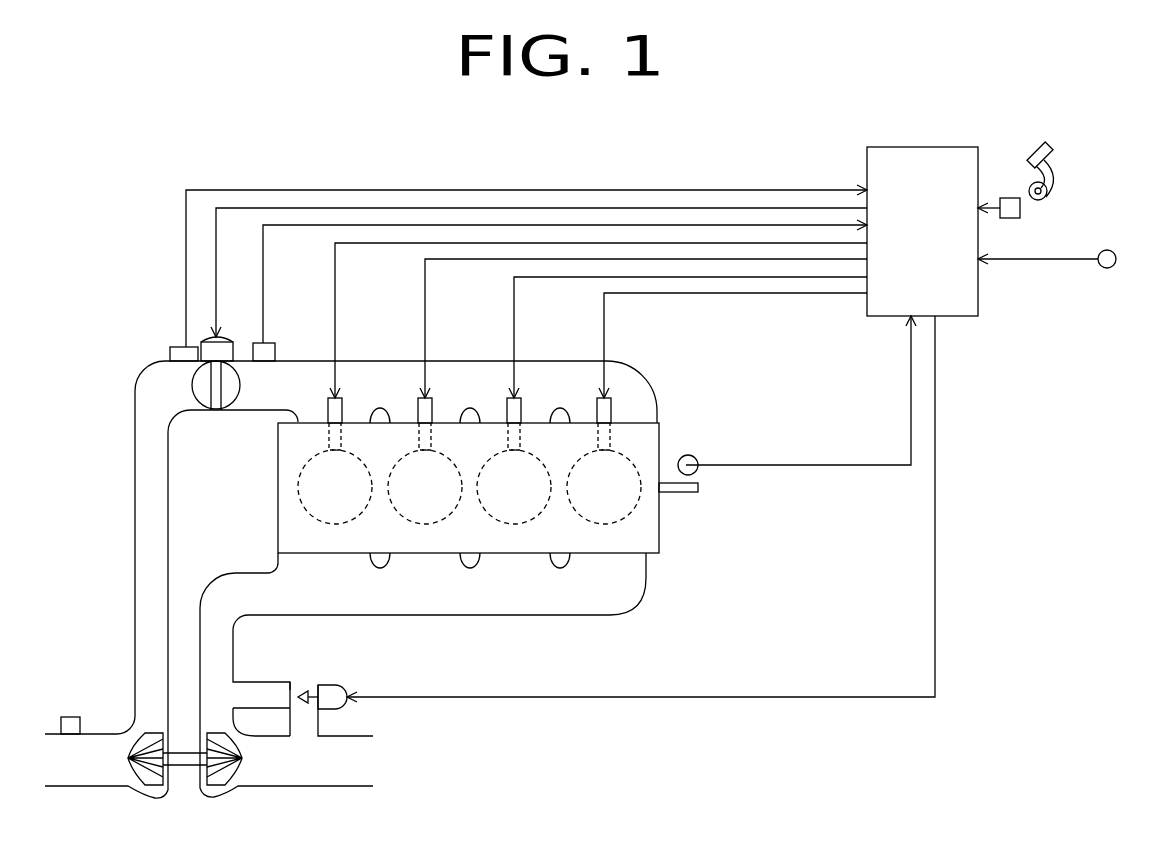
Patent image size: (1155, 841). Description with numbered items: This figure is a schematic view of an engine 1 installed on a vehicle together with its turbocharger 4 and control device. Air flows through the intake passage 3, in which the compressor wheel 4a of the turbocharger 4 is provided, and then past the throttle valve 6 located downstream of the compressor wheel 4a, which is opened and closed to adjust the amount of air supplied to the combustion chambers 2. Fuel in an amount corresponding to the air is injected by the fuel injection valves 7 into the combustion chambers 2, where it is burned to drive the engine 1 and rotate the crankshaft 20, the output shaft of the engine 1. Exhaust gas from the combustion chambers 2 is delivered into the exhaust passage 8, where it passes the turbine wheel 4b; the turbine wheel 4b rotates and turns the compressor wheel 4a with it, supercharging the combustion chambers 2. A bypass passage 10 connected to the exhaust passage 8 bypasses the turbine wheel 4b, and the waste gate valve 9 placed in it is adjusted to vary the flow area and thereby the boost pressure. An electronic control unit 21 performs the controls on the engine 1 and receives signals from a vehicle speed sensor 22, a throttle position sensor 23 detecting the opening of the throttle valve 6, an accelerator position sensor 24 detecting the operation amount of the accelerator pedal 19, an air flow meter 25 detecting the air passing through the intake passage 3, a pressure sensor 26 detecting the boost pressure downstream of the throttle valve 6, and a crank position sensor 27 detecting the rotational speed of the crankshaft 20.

The engine 1 is at (130, 325).
The combustion chambers 2 is at (310, 515).
The intake passage 3 is at (134, 634).
The turbocharger 4 is at (186, 759).
The compressor wheel 4a is at (128, 758).
The turbine wheel 4b is at (243, 758).
The throttle valve 6 is at (240, 384).
The fuel injection valves 7 is at (328, 406).
The exhaust passage 8 is at (368, 736).
The waste gate valve 9 is at (329, 683).
The bypass passage 10 is at (273, 686).
The accelerator pedal 19 is at (1033, 152).
The crankshaft 20 is at (696, 494).
The electronic control unit 21 is at (979, 299).
The vehicle speed sensor 22 is at (1108, 250).
The throttle position sensor 23 is at (178, 346).
The accelerator position sensor 24 is at (1008, 198).
The air flow meter 25 is at (76, 718).
The pressure sensor 26 is at (270, 342).
The crank position sensor 27 is at (689, 455).